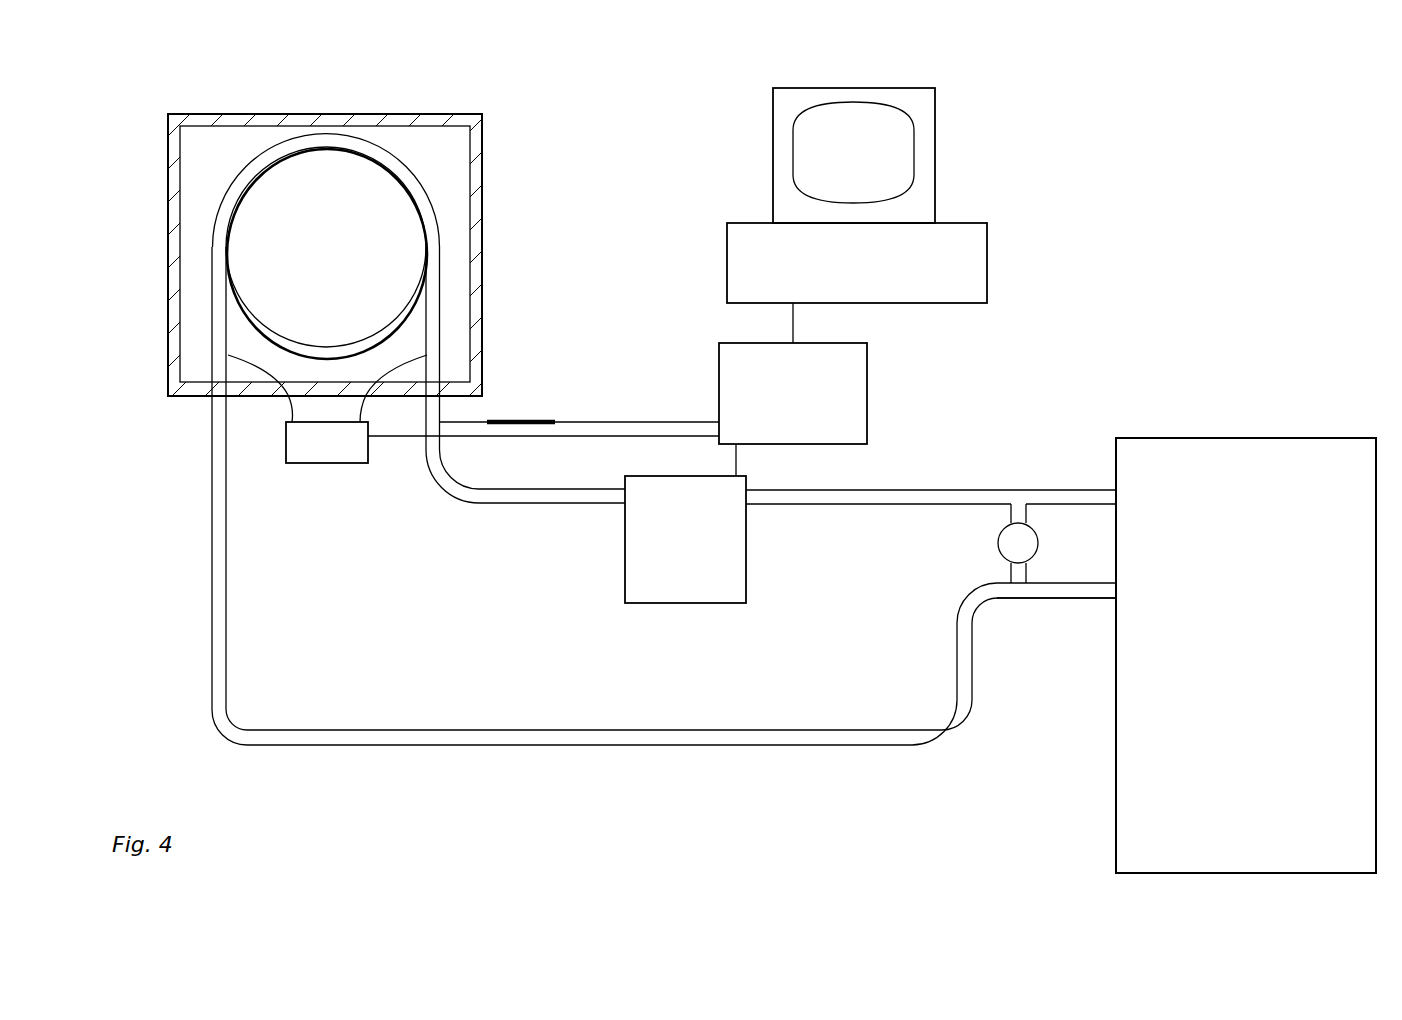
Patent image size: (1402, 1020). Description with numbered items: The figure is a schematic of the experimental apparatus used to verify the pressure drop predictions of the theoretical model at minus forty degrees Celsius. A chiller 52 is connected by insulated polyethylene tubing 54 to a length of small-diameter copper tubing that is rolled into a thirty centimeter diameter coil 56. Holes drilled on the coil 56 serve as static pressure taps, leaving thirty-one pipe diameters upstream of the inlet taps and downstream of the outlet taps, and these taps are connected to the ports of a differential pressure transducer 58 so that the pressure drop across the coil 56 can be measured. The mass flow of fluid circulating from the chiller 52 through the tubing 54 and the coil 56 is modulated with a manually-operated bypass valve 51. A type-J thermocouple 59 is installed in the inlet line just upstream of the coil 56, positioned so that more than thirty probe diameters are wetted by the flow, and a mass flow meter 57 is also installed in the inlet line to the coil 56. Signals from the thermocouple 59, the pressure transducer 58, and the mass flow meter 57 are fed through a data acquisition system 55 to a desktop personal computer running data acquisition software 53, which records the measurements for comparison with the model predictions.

The bypass valve 51 is at (1038, 547).
The chiller 52 is at (1116, 745).
The desktop personal computer running data acquisition software 53 is at (773, 120).
The insulated polyethylene tubing 54 is at (902, 746).
The data acquisition system 55 is at (867, 413).
The coil 56 is at (434, 199).
The mass flow meter 57 is at (747, 526).
The differential pressure transducer 58 is at (286, 443).
The thermocouple 59 is at (512, 426).